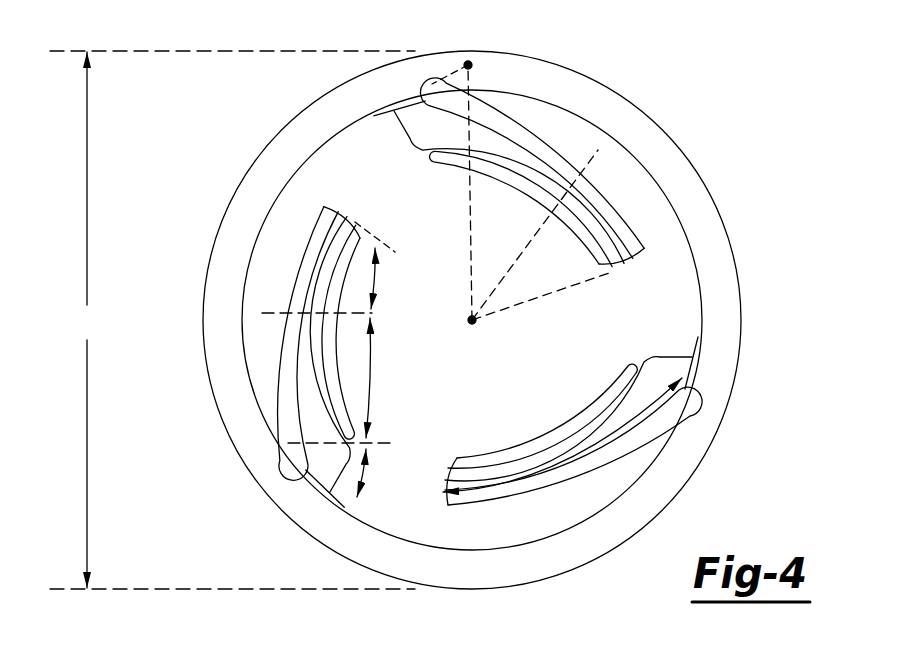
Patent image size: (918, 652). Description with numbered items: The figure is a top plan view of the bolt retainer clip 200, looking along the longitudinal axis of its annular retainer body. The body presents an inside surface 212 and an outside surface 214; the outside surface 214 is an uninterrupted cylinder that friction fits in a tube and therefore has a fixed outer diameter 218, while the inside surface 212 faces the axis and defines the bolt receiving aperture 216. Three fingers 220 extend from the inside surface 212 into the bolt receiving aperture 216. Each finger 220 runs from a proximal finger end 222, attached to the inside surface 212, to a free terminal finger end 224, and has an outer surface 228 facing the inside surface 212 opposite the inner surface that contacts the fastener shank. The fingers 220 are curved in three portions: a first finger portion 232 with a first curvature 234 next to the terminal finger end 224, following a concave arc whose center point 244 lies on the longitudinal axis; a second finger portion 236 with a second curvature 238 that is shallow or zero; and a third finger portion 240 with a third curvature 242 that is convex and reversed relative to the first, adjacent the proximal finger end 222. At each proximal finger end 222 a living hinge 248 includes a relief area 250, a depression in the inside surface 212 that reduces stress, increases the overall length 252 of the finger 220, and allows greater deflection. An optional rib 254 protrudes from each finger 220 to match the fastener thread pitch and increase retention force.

The bolt retainer clip 200 is at (742, 78).
The inside surface 212 is at (348, 134).
The outside surface 214 is at (232, 190).
The bolt receiving aperture 216 is at (490, 412).
The fixed outer diameter 218 is at (232, 320).
The fingers 220 is at (436, 258).
The proximal finger end 222 is at (323, 468).
The terminal finger end 224 is at (347, 205).
The outer surface 228 is at (568, 157).
The first finger portion 232 is at (373, 280).
The first curvature 234 is at (604, 206).
The second finger portion 236 is at (370, 352).
The second curvature 238 is at (512, 155).
The third finger portion 240 is at (383, 442).
The third curvature 242 is at (417, 116).
The center point 244 is at (474, 322).
The living hinge 248 is at (702, 412).
The relief area 250 is at (273, 479).
The overall length 252 is at (583, 450).
The rib 254 is at (625, 402).